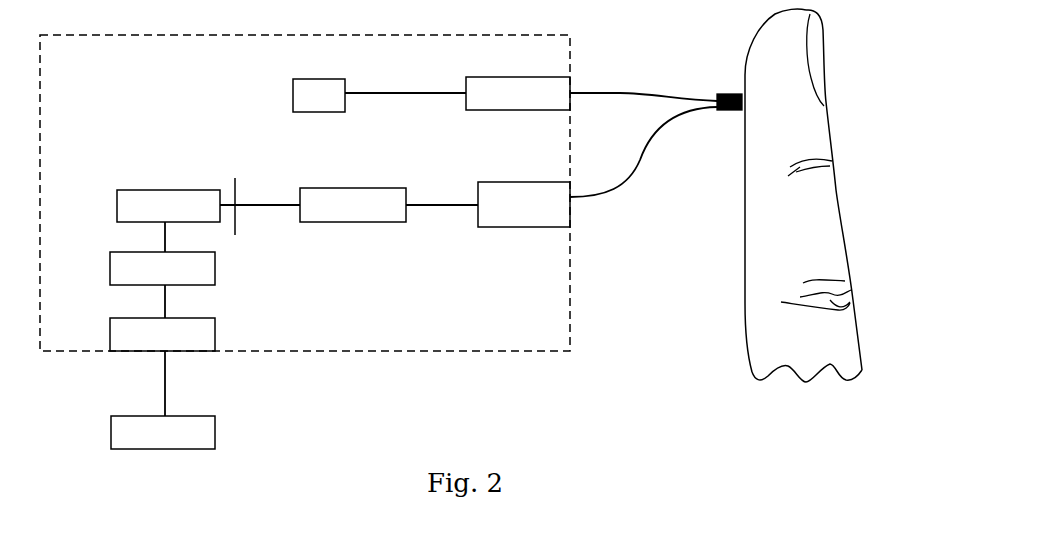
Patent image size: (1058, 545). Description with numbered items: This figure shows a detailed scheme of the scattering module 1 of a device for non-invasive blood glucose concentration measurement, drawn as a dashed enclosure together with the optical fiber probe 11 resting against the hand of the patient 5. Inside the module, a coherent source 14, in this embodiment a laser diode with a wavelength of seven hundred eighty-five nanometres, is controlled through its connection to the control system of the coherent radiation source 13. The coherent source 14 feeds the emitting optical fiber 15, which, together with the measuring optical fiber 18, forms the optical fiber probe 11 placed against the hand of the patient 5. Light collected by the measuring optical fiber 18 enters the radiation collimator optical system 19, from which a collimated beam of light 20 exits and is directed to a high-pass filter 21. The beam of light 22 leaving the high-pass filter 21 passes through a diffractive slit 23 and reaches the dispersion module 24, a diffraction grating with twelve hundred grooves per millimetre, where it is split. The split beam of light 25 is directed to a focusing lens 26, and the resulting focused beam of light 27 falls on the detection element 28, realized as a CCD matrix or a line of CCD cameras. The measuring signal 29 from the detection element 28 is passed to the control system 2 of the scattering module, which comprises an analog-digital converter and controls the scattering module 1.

The scattering module 1 is at (428, 352).
The control system of the scattering module 2 is at (202, 424).
The hand of the patient 5 is at (838, 190).
The optical fiber probe 11 is at (725, 91).
The control system of the coherent radiation source 13 is at (320, 90).
The coherent source 14 is at (515, 76).
The emitting optical fiber 15 is at (653, 97).
The measuring optical fiber 18 is at (650, 153).
The radiation collimator optical system 19 is at (518, 208).
The collimated beam of light 20 is at (433, 203).
The high-pass filter 21 is at (312, 212).
The beam of light 22 is at (253, 203).
The diffractive slit 23 is at (234, 197).
The dispersion module 24 is at (183, 203).
The split beam of light 25 is at (163, 230).
The focusing lens 26 is at (203, 263).
The focused beam of light 27 is at (158, 295).
The detection element 28 is at (203, 320).
The measuring signal 29 is at (158, 385).